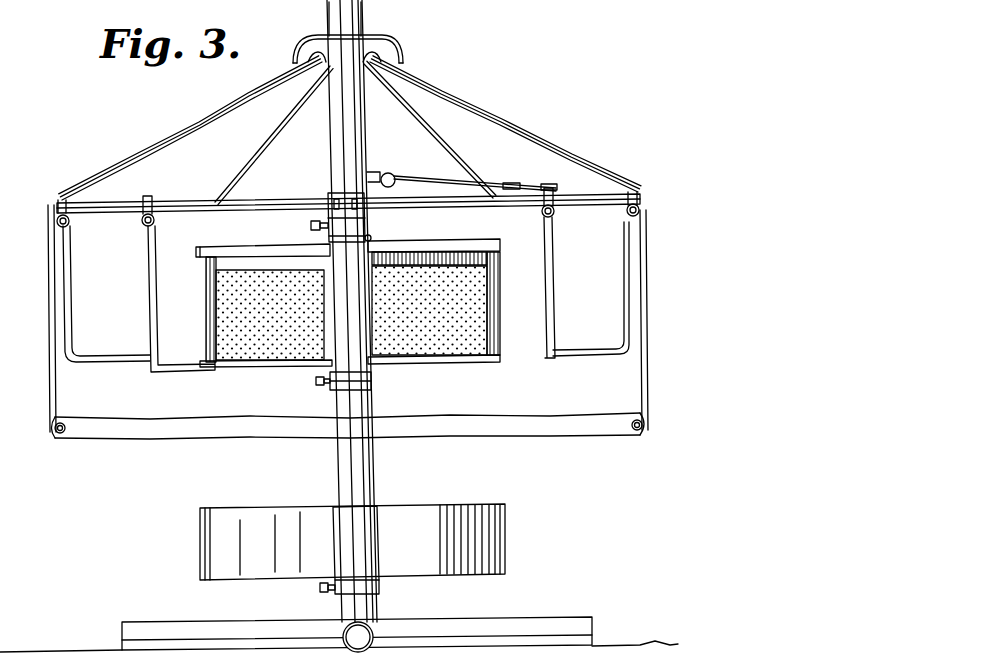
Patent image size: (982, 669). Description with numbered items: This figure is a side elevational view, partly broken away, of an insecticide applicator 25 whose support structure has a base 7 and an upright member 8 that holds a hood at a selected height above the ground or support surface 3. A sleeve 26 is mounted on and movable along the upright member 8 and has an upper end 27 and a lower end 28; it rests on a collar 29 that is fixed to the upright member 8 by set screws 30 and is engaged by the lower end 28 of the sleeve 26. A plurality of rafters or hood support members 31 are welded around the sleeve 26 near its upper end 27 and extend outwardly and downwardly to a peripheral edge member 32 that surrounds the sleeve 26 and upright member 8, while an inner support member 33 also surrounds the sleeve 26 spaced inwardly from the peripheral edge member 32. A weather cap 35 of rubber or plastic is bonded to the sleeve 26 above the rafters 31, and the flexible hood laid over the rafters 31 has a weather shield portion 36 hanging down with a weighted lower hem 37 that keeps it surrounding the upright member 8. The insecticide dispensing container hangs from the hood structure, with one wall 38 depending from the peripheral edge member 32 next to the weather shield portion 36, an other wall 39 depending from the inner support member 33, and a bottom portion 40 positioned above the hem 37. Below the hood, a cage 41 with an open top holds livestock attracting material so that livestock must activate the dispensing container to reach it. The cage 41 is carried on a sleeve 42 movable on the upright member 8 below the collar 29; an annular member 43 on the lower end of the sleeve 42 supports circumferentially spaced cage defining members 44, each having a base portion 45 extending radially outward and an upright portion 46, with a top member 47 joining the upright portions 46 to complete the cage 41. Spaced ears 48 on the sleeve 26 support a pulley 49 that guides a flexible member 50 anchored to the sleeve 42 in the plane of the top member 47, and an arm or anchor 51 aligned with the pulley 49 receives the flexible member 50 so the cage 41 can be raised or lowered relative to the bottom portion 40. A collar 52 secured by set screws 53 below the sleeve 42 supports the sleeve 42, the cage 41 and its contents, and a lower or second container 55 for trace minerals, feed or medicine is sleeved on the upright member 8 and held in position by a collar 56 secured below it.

The ground or support surface 3 is at (627, 645).
The base 7 is at (548, 616).
The upright member 8 is at (340, 470).
The insecticide applicator 25 is at (514, 47).
The sleeve 26 is at (328, 152).
The upper end 27 is at (325, 35).
The lower end 28 is at (328, 203).
The collar 29 is at (371, 238).
The set screws 30 is at (311, 222).
The rafters or hood support members 31 is at (470, 112).
The peripheral edge member 32 is at (62, 200).
The inner support member 33 is at (142, 205).
The weather cap 35 is at (376, 36).
The weather shield portion 36 is at (648, 290).
The lower hem 37 is at (175, 445).
The one wall 38 is at (643, 260).
The other wall 39 is at (545, 298).
The bottom portion 40 is at (120, 368).
The cage 41 is at (205, 287).
The sleeve 42 is at (300, 258).
The annular member 43 is at (298, 366).
The cage defining members 44 is at (500, 266).
The base portion 45 is at (212, 368).
The upright portion 46 is at (500, 325).
The top member 47 is at (198, 252).
The spaced ears 48 is at (378, 178).
The pulley 49 is at (385, 175).
The flexible member 50 is at (442, 182).
The arm or anchor 51 is at (550, 186).
The collar 52 is at (371, 382).
The set screws 53 is at (318, 385).
The lower or second container 55 is at (470, 505).
The collar 56 is at (385, 585).